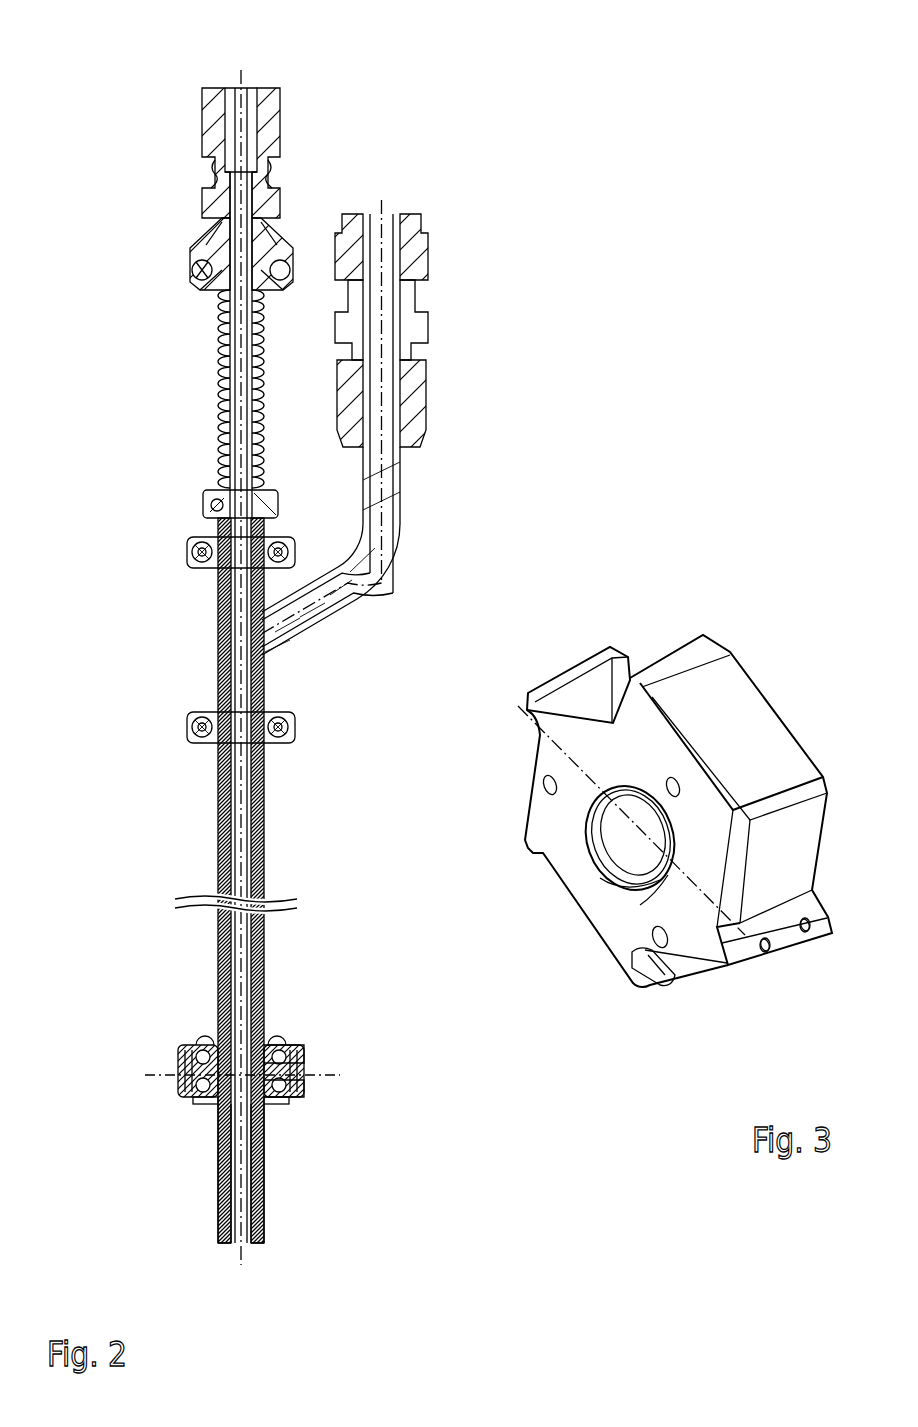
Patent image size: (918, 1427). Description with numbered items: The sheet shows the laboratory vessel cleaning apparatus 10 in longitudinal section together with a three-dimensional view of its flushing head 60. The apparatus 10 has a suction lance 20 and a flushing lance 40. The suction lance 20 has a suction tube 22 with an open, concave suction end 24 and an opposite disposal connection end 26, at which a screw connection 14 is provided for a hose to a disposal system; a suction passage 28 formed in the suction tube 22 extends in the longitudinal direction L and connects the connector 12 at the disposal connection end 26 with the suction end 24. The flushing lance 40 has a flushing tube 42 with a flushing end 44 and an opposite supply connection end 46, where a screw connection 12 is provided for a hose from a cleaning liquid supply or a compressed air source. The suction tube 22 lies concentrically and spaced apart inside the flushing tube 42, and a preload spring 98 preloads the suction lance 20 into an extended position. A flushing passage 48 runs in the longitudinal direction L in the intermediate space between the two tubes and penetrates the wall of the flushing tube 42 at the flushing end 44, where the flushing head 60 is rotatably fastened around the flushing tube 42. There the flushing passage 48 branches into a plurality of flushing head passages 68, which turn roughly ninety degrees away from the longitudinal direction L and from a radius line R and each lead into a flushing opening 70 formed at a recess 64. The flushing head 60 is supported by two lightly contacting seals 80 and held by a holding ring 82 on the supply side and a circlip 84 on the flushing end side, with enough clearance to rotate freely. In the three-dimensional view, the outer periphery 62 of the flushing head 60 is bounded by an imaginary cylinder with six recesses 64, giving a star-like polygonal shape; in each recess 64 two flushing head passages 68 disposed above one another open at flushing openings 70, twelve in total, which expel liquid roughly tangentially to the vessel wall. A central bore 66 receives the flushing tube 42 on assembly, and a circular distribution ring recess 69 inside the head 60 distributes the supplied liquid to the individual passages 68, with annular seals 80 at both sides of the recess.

In FIG. 2, the laboratory vessel cleaning apparatus 10 is at (125, 125).
In FIG. 2, the longitudinal direction L is at (240, 85).
In FIG. 2, the disposal connection end 26 is at (297, 120).
In FIG. 2, the screw connection 12 is at (205, 190).
In FIG. 2, the supply connection end 46 is at (436, 193).
In FIG. 2, the screw connection 14 is at (430, 330).
In FIG. 2, the preload spring 98 is at (222, 403).
In FIG. 2, the flushing lance 40 is at (195, 680).
In FIG. 2, the flushing tube 42 is at (225, 790).
In FIG. 2, the flushing passage 48 is at (220, 880).
In FIG. 2, the flushing end 44 is at (165, 1025).
In FIG. 2, the flushing opening 70 is at (180, 1055).
In FIG. 3, the flushing opening 70 is at (813, 935).
In FIG. 2, the flushing head passage 68 is at (173, 1080).
In FIG. 3, the flushing head passage 68 is at (622, 808).
In FIG. 2, the holding ring 82 is at (270, 1040).
In FIG. 2, the circlip 84 is at (270, 1103).
In FIG. 2, the flushing head 60 is at (300, 1052).
In FIG. 3, the flushing head 60 is at (525, 705).
In FIG. 2, the radius line R is at (325, 1080).
In FIG. 3, the radius line R is at (518, 706).
In FIG. 2, the suction lance 20 is at (205, 1165).
In FIG. 2, the suction end 24 is at (220, 1222).
In FIG. 2, the suction tube 22 is at (253, 1193).
In FIG. 2, the suction passage 28 is at (245, 1255).
In FIG. 3, the outer periphery 62 is at (703, 645).
In FIG. 3, the recess 64 is at (607, 672).
In FIG. 3, the seal 80 is at (606, 848).
In FIG. 3, the bore 66 is at (607, 877).
In FIG. 3, the distribution ring recess 69 is at (618, 890).